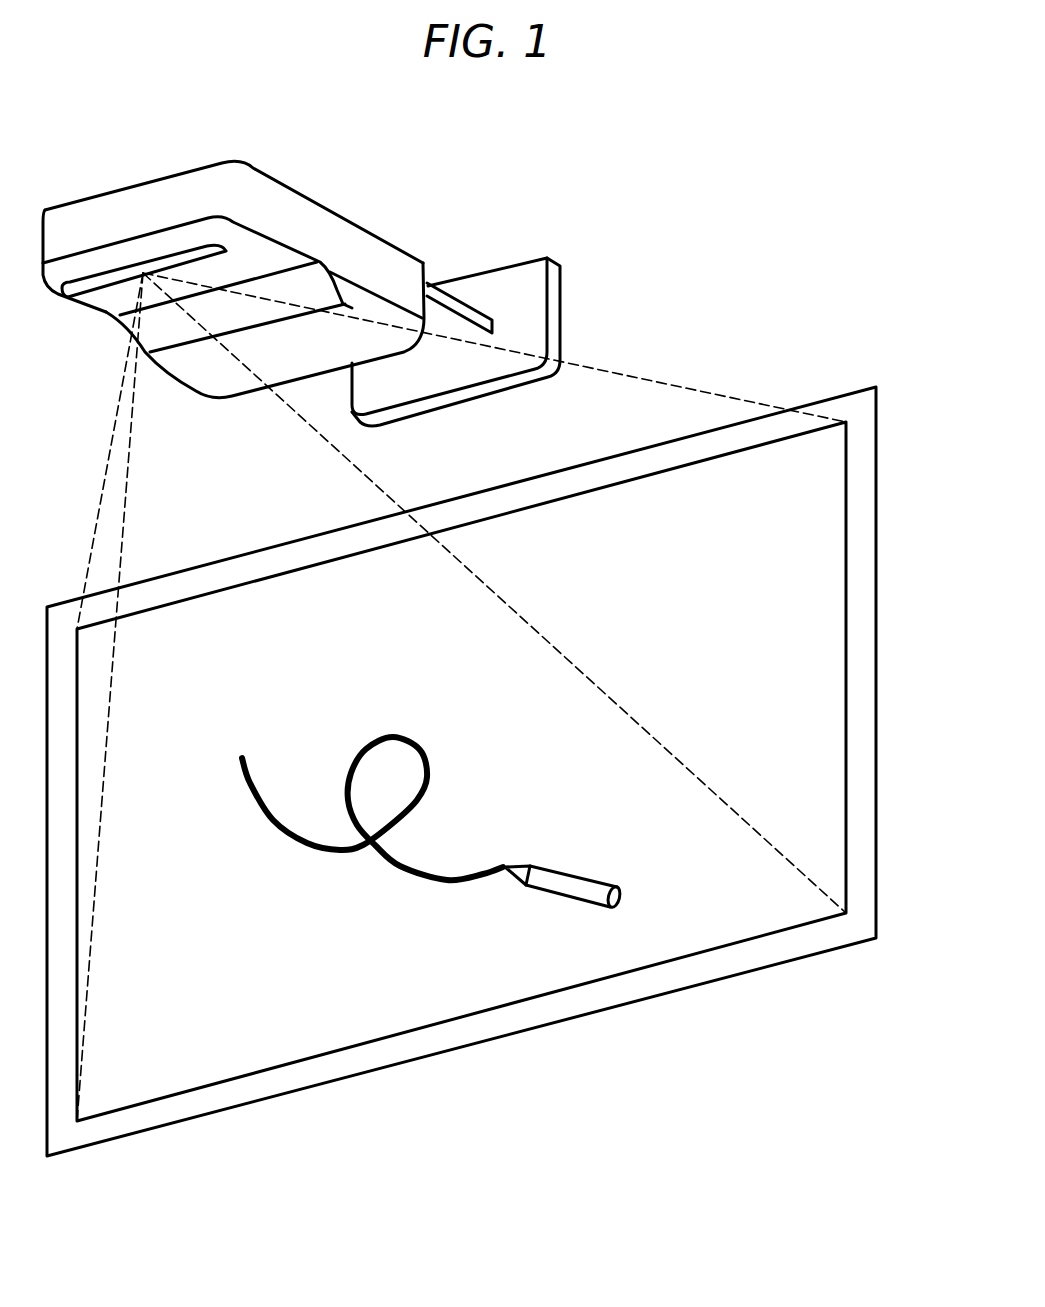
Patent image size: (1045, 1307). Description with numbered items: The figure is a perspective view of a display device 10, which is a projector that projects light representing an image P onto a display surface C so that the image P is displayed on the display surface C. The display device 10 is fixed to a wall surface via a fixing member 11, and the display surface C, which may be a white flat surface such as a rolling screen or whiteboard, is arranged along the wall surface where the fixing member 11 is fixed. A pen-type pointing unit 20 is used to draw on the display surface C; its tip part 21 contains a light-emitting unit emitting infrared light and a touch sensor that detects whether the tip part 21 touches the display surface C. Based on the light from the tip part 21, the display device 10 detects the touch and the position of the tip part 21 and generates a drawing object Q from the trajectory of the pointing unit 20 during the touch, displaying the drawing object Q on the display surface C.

The display device 10 is at (140, 198).
The fixing member 11 is at (462, 310).
The pointing unit 20 is at (603, 890).
The tip part 21 is at (510, 864).
The display surface C is at (852, 408).
The image P is at (829, 538).
The drawing object Q is at (410, 742).